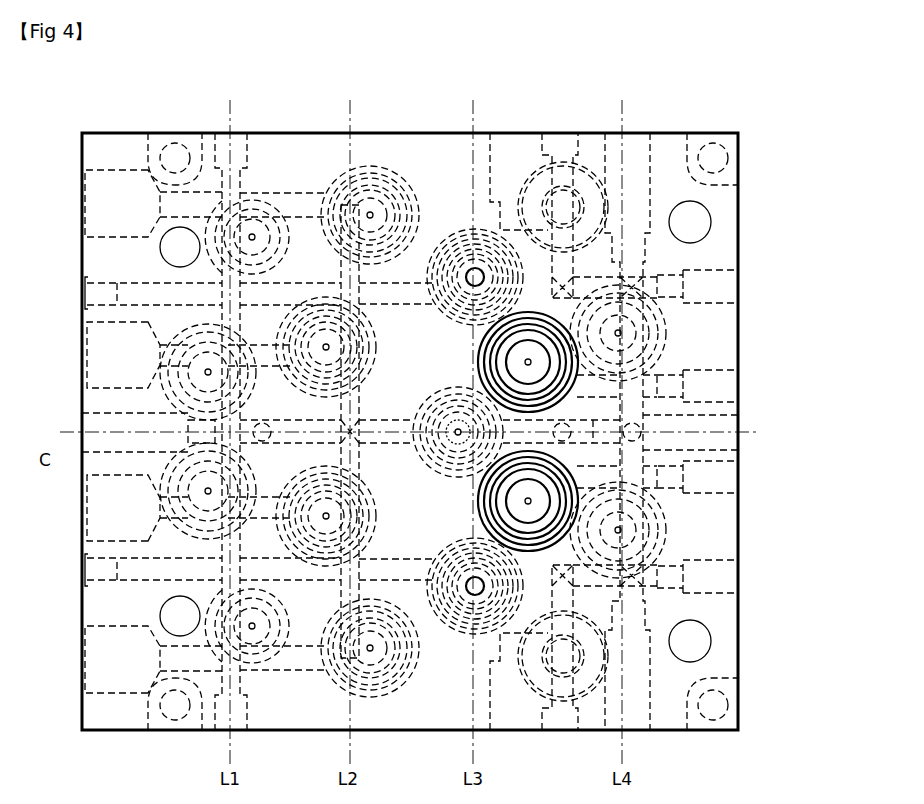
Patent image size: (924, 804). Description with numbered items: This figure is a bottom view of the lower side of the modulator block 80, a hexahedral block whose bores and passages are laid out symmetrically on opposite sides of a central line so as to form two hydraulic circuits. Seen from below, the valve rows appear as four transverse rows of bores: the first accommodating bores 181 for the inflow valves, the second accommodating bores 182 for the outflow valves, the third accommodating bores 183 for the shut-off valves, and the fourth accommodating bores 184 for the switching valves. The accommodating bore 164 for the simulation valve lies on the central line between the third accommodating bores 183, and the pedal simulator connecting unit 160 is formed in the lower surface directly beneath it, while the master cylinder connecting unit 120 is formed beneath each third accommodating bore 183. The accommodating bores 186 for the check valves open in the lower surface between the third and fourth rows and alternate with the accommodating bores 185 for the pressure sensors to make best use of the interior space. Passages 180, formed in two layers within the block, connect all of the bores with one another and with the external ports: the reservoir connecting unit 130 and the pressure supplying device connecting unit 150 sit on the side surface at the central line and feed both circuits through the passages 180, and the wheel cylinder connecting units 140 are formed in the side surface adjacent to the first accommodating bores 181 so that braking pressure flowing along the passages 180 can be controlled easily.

The modulator block 80 is at (393, 133).
The master cylinder connecting unit 120 is at (466, 290).
The reservoir connecting unit 130 is at (113, 436).
The wheel cylinder connecting unit 140 is at (93, 215).
The pressure supplying device connecting unit 150 is at (722, 436).
The pedal simulator connecting unit 160 is at (455, 440).
The accommodating bore 164 is at (421, 450).
The passages 180 is at (323, 293).
The first accommodating bores 181 is at (258, 212).
The second accommodating bores 182 is at (403, 185).
The third accommodating bores 183 is at (460, 234).
The fourth accommodating bores 184 is at (663, 331).
The accommodating bores 185 is at (562, 165).
The accommodating bores 186 is at (480, 361).